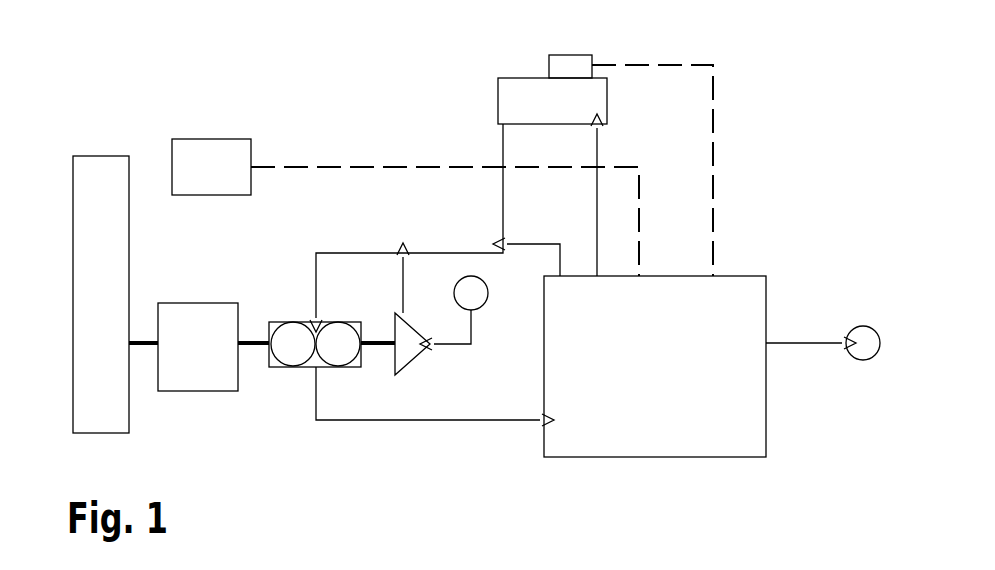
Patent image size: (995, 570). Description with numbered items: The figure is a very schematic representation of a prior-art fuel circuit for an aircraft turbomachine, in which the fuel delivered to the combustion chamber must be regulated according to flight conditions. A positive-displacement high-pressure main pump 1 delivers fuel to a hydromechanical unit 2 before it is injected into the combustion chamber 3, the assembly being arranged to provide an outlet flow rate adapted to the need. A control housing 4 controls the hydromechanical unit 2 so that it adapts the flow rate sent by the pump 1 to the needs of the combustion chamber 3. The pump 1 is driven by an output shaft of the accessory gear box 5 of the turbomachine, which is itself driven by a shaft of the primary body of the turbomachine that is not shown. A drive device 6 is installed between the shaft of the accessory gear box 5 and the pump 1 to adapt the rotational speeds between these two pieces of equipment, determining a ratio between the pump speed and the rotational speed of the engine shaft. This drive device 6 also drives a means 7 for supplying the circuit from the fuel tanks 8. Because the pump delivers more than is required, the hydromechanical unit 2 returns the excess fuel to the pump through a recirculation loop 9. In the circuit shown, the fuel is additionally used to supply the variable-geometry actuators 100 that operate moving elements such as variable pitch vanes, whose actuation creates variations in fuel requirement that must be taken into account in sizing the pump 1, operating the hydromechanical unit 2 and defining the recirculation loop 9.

The high-pressure main pump 1 is at (276, 367).
The hydromechanical unit 2 is at (614, 413).
The combustion chamber 3 is at (871, 354).
The control housing 4 is at (195, 163).
The accessory gear box 5 is at (105, 226).
The drive device 6 is at (193, 366).
The means for supplying the circuit 7 is at (407, 353).
The fuel tanks 8 is at (479, 304).
The recirculation loop 9 is at (540, 242).
The variable-geometry actuators 100 is at (517, 95).